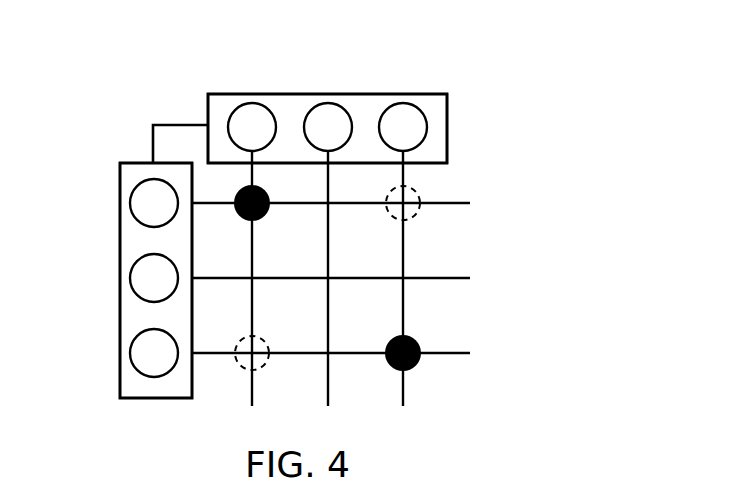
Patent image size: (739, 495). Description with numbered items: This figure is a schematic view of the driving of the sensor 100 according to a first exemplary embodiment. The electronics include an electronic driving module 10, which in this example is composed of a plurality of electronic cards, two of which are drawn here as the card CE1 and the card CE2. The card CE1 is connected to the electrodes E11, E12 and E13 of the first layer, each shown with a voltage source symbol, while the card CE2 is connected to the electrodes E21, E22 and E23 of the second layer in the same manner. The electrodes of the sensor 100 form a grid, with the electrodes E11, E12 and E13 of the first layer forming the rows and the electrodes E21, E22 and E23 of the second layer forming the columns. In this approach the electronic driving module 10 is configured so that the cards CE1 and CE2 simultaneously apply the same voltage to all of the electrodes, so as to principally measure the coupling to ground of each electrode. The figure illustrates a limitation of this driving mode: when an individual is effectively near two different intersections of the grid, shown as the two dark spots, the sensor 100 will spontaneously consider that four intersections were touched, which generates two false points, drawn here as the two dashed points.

The sensor 100 is at (548, 110).
The electronic driving module 10 is at (125, 152).
The electronic card CE1 is at (120, 208).
The electronic card CE2 is at (427, 92).
The electrode E11 is at (185, 205).
The electrode E12 is at (185, 280).
The electrode E13 is at (185, 355).
The electrode E21 is at (250, 153).
The electrode E22 is at (327, 153).
The electrode E23 is at (402, 153).